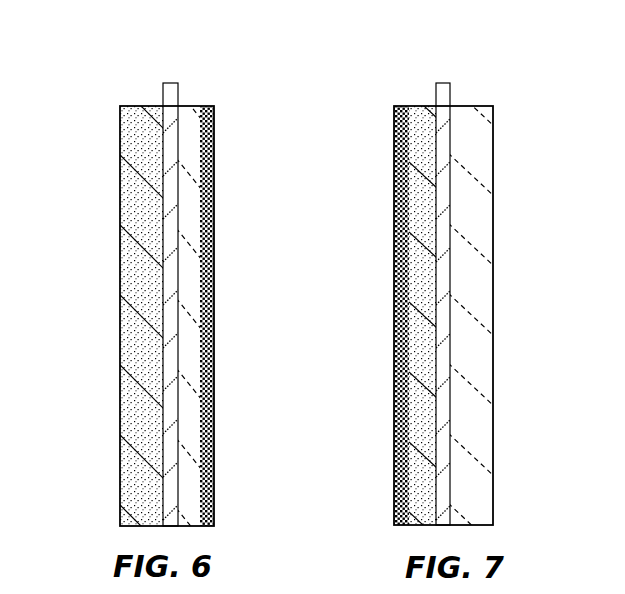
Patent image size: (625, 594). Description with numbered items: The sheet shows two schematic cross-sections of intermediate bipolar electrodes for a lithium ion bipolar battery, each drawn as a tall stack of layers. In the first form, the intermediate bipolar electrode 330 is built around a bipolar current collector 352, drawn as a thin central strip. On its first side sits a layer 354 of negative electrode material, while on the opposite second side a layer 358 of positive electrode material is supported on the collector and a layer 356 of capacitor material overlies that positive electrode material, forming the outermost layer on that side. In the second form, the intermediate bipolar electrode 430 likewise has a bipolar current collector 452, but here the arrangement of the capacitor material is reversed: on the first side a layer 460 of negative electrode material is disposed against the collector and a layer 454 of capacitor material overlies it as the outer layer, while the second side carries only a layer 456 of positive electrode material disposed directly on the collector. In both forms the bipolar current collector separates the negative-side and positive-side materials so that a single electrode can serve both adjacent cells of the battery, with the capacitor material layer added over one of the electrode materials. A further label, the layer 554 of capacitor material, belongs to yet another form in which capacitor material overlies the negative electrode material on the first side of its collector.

In FIG. 6, the intermediate bipolar electrode 330 is at (169, 275).
In FIG. 6, the bipolar current collector 352 is at (172, 83).
In FIG. 6, the layer of negative electrode material 354 is at (120, 278).
In FIG. 6, the layer of capacitor material 356 is at (215, 270).
In FIG. 6, the layer of positive electrode material 358 is at (188, 106).
In FIG. 7, the intermediate bipolar electrode 430 is at (445, 279).
In FIG. 7, the bipolar current collector 452 is at (445, 83).
In FIG. 7, the layer of capacitor material 454 is at (394, 318).
In FIG. 7, the layer of positive electrode material 456 is at (493, 272).
In FIG. 7, the layer of negative electrode material 460 is at (426, 106).
In FIG. 7, the layer of capacitor material 554 is at (605, 307).